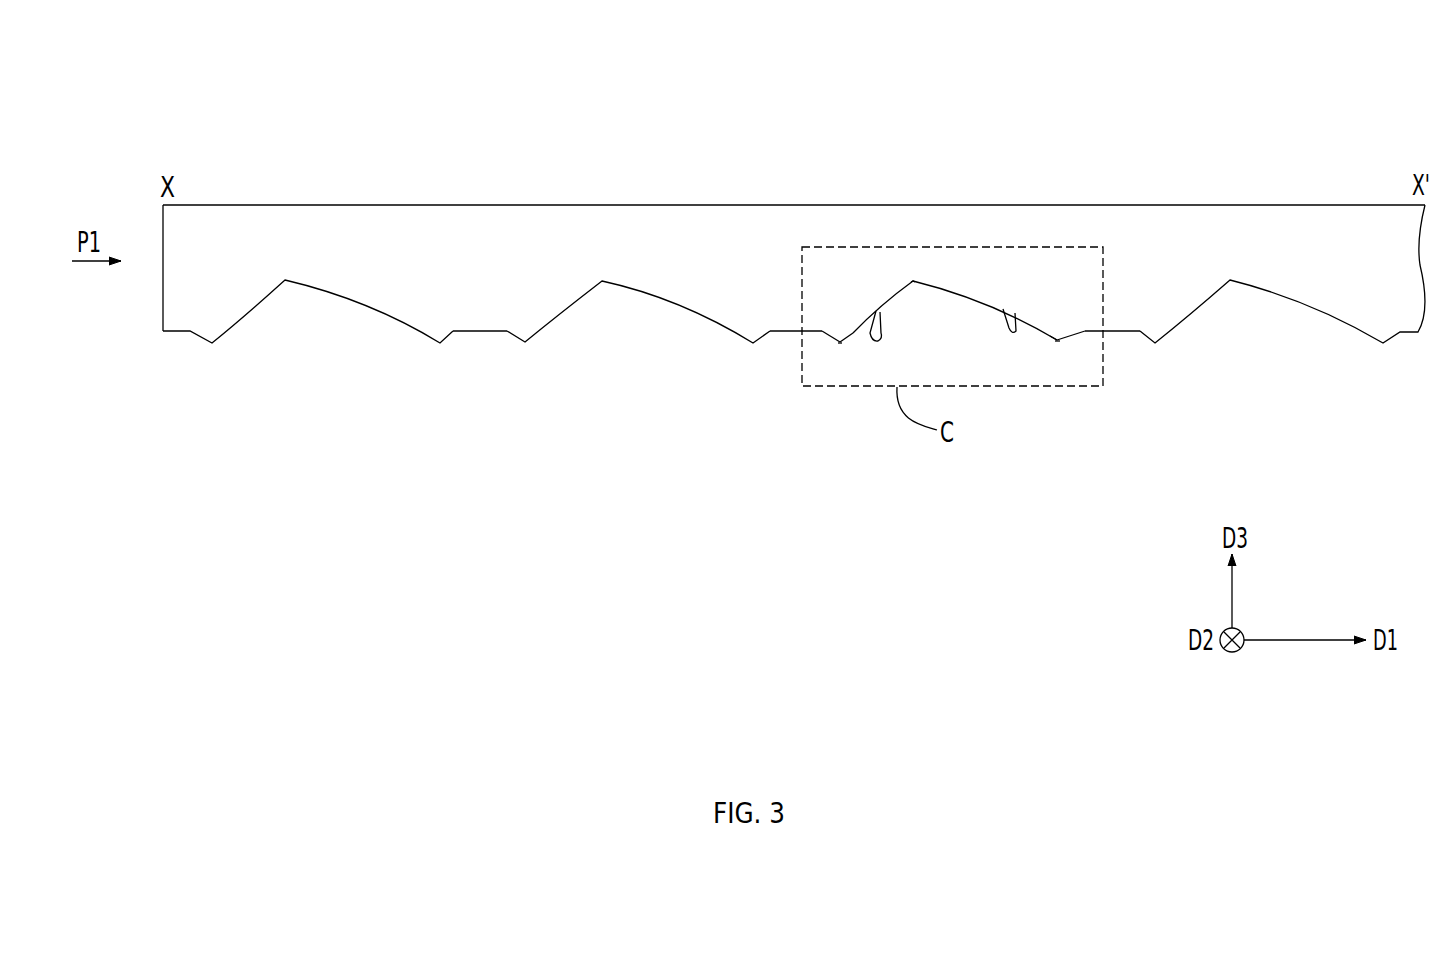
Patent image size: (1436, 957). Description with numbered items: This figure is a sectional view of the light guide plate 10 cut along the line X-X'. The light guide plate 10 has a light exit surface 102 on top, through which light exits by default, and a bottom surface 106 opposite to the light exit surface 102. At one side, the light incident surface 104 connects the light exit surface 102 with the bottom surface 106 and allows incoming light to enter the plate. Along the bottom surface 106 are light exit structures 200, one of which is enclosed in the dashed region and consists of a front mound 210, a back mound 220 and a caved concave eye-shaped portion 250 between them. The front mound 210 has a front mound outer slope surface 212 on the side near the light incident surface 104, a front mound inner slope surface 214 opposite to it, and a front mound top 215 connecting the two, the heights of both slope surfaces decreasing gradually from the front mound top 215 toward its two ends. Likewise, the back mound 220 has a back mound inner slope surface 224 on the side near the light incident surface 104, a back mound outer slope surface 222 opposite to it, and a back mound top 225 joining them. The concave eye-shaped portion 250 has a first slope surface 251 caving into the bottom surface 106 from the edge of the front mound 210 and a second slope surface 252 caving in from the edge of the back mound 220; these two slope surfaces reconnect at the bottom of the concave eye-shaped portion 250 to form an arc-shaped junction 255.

The light guide plate 10 is at (150, 126).
The light exit surface 102 is at (572, 204).
The light incident surface 104 is at (162, 283).
The bottom surface 106 is at (480, 333).
The light exit structures 200 is at (450, 367).
The front mound 210 is at (790, 485).
The front mound outer slope surface 212 is at (830, 336).
The front mound inner slope surface 214 is at (847, 345).
The front mound top 215 is at (840, 343).
The back mound 220 is at (1142, 432).
The back mound outer slope surface 222 is at (1090, 343).
The back mound inner slope surface 224 is at (1067, 342).
The back mound top 225 is at (1067, 342).
The concave eye-shaped portion 250 is at (1072, 148).
The first slope surface 251 is at (865, 328).
The second slope surface 252 is at (1017, 318).
The arc-shaped junction 255 is at (913, 281).